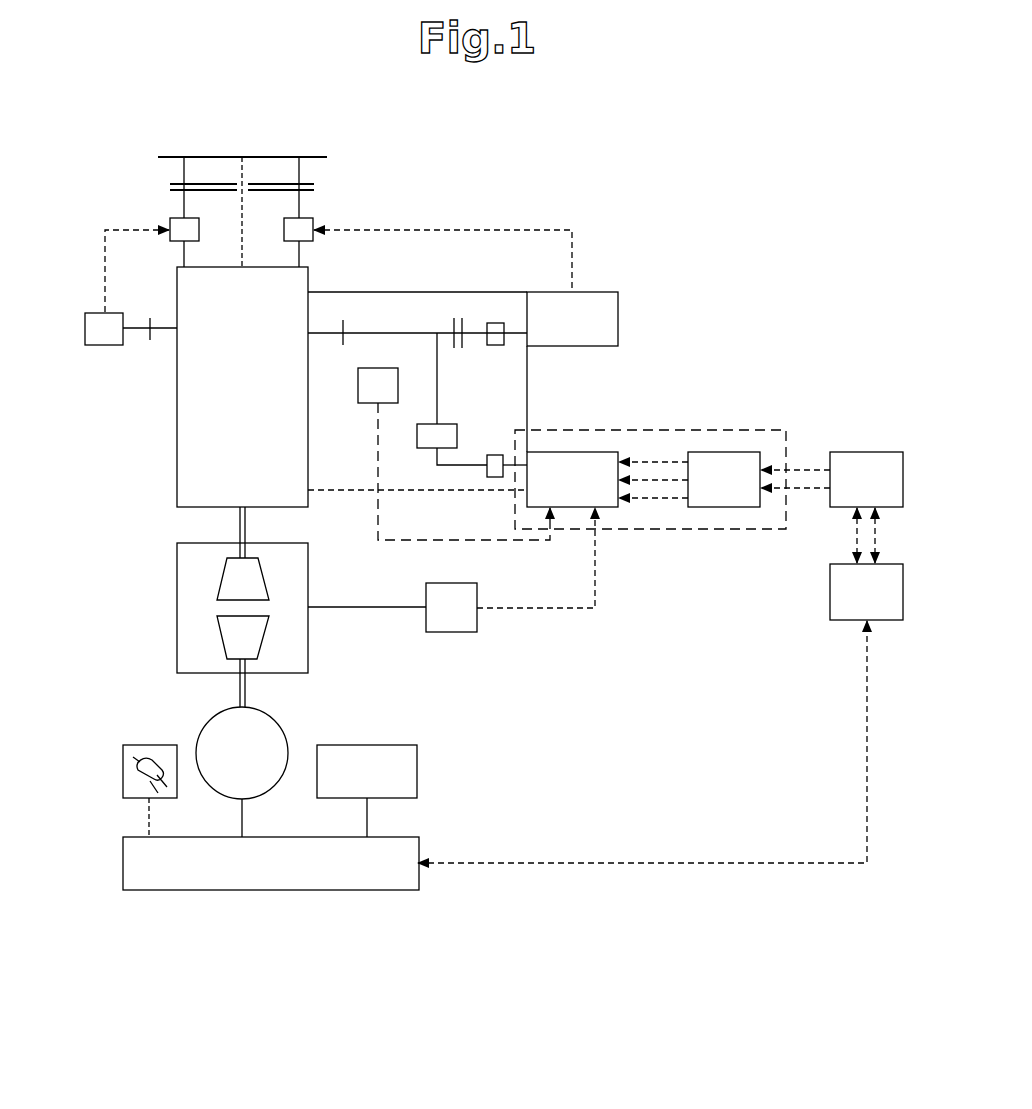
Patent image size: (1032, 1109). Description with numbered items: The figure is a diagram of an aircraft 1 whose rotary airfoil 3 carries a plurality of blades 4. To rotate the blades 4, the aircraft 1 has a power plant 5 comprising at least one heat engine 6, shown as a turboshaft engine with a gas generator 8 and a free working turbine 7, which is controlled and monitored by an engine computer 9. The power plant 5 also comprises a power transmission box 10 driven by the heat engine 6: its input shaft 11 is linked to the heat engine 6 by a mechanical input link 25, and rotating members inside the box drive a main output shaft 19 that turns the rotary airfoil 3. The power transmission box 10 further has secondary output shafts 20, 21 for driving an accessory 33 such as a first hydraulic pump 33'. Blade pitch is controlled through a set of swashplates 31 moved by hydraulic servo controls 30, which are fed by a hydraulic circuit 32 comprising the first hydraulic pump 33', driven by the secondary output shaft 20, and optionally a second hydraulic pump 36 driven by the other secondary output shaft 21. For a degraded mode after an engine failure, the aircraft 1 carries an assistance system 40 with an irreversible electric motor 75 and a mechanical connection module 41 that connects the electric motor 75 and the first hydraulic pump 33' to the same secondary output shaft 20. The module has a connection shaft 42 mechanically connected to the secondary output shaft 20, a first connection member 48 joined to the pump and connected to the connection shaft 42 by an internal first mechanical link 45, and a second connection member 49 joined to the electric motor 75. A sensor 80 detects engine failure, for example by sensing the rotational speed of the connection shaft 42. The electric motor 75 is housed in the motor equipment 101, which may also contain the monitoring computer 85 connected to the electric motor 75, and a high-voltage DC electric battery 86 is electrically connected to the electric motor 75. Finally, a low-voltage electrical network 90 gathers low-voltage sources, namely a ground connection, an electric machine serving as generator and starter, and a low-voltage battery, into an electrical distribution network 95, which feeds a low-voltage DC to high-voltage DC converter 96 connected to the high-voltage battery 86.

The aircraft 1 is at (608, 147).
The rotary airfoil 3 is at (348, 151).
The blades 4 is at (312, 157).
The power plant 5 is at (155, 184).
The heat engine 6 is at (177, 657).
The working turbine 7 is at (227, 565).
The gas generator 8 is at (218, 632).
The engine computer 9 is at (460, 621).
The power transmission box 10 is at (228, 399).
The input shaft 11 is at (242, 505).
The main output shaft 19 is at (242, 172).
The secondary output shaft 20 is at (328, 336).
The secondary output shaft 21 is at (165, 333).
The mechanical input link 25 is at (240, 520).
The hydraulic servo controls 30 is at (177, 227).
The set of swashplates 31 is at (333, 188).
The hydraulic circuit 32 is at (592, 261).
The accessory 33 is at (572, 319).
The first hydraulic pump 33' is at (658, 327).
The second hydraulic pump 36 is at (97, 318).
The assistance system 40 is at (760, 572).
The mechanical connection module 41 is at (412, 490).
The connection shaft 42 is at (406, 333).
The first mechanical link 45 is at (502, 355).
The first connection member 48 is at (497, 323).
The second connection member 49 is at (497, 455).
The electric motor 75 is at (558, 494).
The sensor 80 is at (368, 403).
The monitoring computer 85 is at (710, 494).
The high-voltage DC electric battery 86 is at (852, 494).
The low-voltage electrical network 90 is at (449, 912).
The electrical distribution network 95 is at (271, 863).
The low-voltage DC to high-voltage DC electrical converter 96 is at (852, 606).
The motor equipment 101 is at (728, 430).